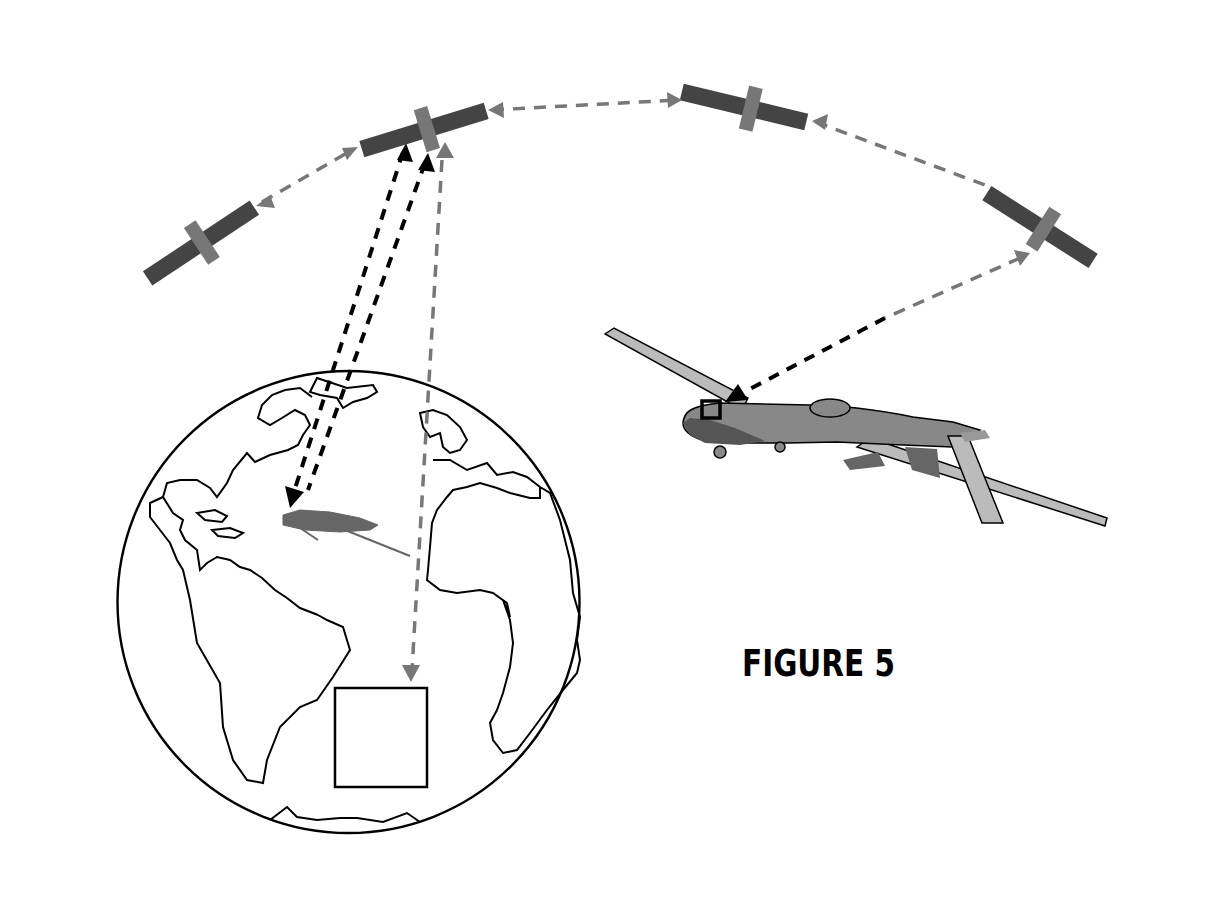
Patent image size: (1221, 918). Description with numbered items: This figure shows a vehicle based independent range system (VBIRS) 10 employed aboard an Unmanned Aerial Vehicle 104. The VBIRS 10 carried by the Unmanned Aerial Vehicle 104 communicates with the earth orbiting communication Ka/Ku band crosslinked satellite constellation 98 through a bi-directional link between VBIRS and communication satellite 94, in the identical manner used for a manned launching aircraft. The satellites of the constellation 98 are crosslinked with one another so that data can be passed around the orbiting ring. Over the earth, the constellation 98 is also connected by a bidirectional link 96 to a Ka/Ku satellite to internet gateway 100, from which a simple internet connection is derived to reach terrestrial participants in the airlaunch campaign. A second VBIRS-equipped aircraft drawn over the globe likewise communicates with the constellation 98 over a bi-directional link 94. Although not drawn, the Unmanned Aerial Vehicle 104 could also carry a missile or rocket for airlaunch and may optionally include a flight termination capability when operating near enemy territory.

The vehicle based independent range system (VBIRS) 10 is at (699, 403).
The bi-directional link between VBIRS and communication satellite 94 is at (657, 325).
The bidirectional link between Ka/Ku band satellite constellation and internet gatew 96 is at (439, 412).
The earth orbiting communication Ka/Ku band crosslinked satellite constellation 98 is at (611, 183).
The Ka/Ku satellite to internet gateway 100 is at (400, 737).
The Unmanned Aerial Vehicle 104 is at (300, 545).